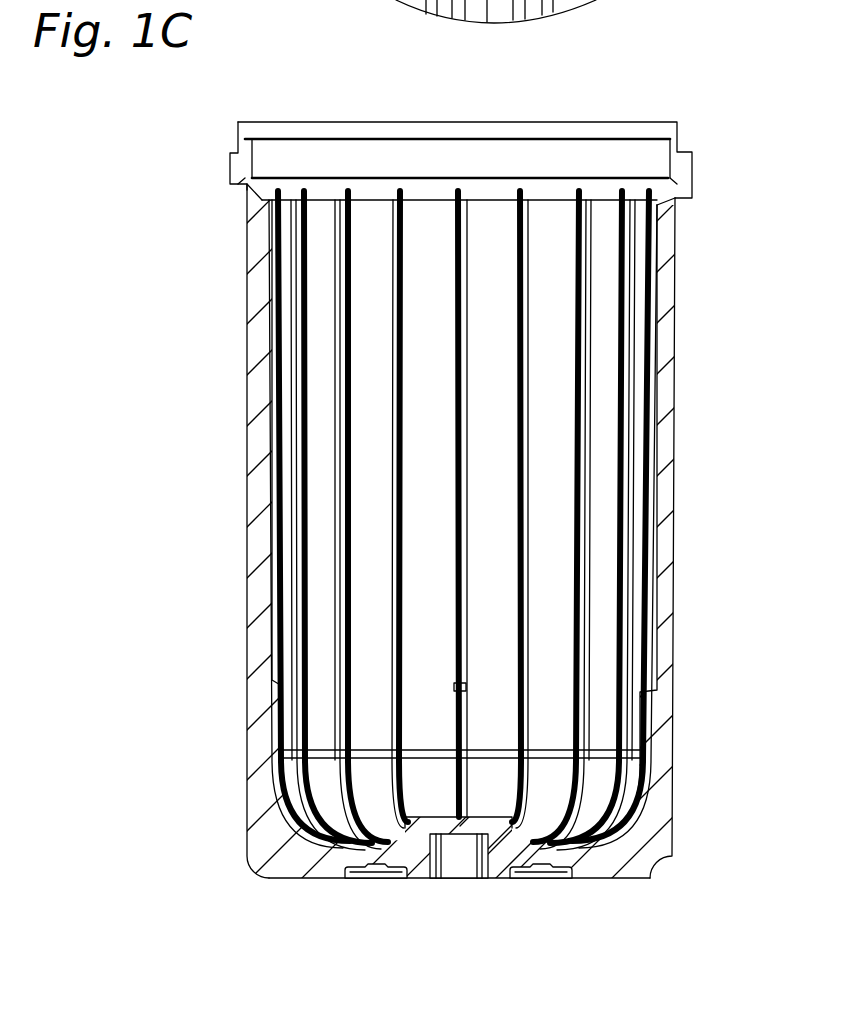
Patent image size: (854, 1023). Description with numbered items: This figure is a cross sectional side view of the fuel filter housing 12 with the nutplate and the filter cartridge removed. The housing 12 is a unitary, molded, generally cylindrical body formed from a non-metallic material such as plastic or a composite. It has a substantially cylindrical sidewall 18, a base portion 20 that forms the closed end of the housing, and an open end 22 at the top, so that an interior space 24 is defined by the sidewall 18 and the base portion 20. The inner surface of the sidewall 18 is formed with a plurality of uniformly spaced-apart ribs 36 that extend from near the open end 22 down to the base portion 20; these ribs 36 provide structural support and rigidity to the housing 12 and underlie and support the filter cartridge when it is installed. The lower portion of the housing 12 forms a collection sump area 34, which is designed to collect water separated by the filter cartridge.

The housing 12 is at (676, 293).
The sidewall 18 is at (675, 386).
The base portion 20 is at (322, 880).
The open end 22 is at (633, 150).
The interior space 24 is at (415, 520).
The collection sump area 34 is at (633, 803).
The ribs 36 is at (336, 482).